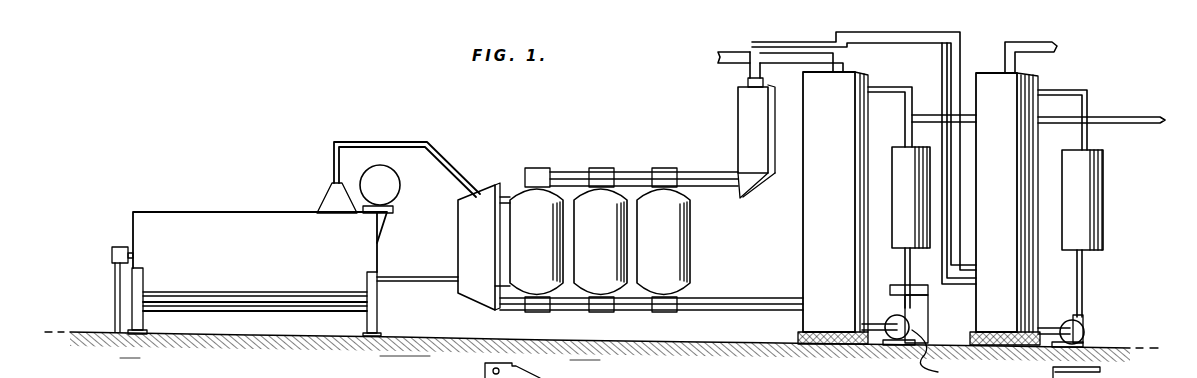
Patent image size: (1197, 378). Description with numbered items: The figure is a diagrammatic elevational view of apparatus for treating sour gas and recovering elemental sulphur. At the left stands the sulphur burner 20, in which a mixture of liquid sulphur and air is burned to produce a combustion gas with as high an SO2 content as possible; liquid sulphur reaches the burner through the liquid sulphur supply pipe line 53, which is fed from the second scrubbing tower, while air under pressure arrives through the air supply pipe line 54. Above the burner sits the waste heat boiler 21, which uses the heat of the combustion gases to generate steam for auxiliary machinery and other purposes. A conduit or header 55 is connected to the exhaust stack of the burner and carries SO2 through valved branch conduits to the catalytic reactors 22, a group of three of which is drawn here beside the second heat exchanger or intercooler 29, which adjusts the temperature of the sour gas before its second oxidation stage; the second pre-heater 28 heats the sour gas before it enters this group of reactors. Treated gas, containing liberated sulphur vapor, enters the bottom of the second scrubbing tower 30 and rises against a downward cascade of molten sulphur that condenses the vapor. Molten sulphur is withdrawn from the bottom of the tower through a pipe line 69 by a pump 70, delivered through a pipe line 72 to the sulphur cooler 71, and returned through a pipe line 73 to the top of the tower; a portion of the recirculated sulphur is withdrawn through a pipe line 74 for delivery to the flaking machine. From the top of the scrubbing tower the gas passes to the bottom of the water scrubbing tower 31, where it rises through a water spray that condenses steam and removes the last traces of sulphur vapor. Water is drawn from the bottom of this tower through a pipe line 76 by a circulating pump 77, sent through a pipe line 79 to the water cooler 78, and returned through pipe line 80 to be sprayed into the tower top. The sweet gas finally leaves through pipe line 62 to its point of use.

The sulphur burner 20 is at (266, 212).
The waste heat boiler 21 is at (398, 191).
The catalytic reactors 22 is at (538, 249).
The second pre-heater 28 is at (743, 122).
The second heat exchanger or intercooler 29 is at (488, 257).
The second scrubbing tower 30 is at (833, 217).
The water scrubbing tower 31 is at (1000, 209).
The liquid sulphur supply pipe line 53 is at (114, 310).
The air supply pipe line 54 is at (428, 269).
The conduit or header 55 is at (446, 163).
The pipe line 62 is at (1018, 41).
The pipe line 69 is at (872, 327).
The pump 70 is at (938, 353).
The sulphur cooler 71 is at (895, 157).
The pipe line 72 is at (904, 266).
The pipe line 73 is at (900, 86).
The pipe line 74 is at (1121, 119).
The pipe line 76 is at (1048, 330).
The circulating pump 77 is at (1084, 345).
The water cooler 78 is at (1103, 209).
The pipe line 79 is at (1085, 277).
The pipe line 80 is at (1073, 91).